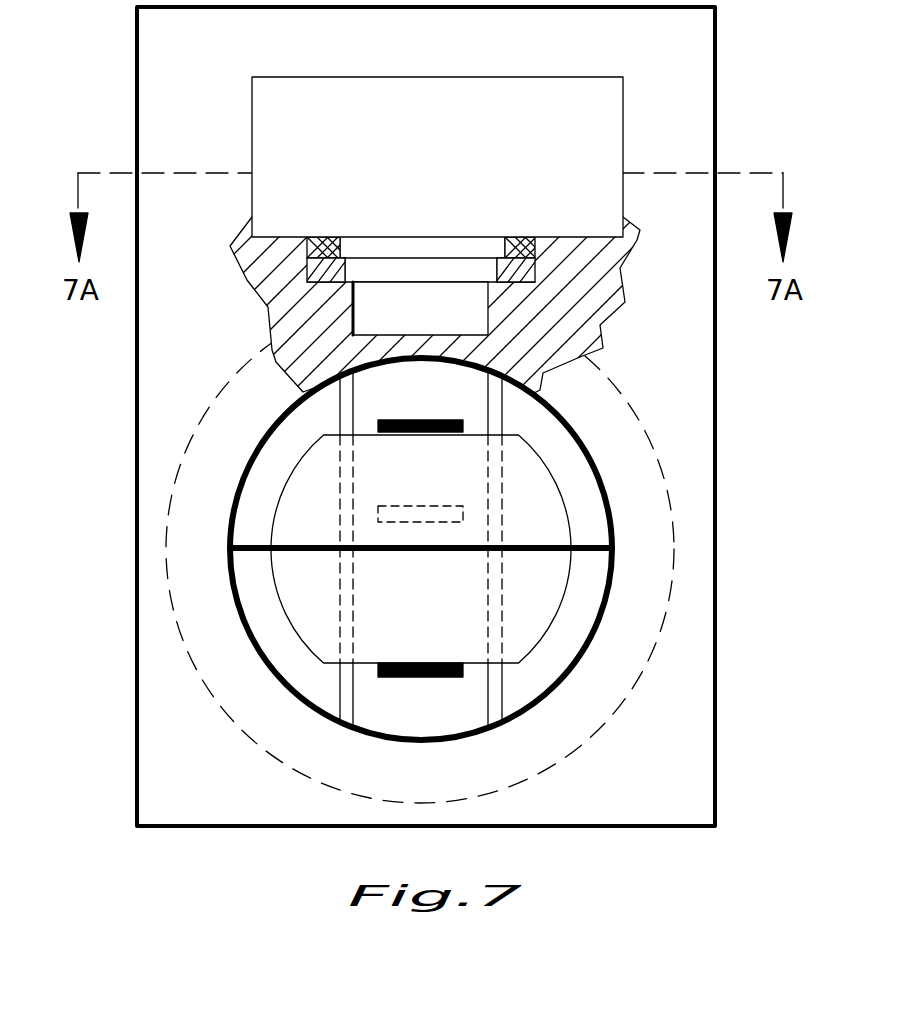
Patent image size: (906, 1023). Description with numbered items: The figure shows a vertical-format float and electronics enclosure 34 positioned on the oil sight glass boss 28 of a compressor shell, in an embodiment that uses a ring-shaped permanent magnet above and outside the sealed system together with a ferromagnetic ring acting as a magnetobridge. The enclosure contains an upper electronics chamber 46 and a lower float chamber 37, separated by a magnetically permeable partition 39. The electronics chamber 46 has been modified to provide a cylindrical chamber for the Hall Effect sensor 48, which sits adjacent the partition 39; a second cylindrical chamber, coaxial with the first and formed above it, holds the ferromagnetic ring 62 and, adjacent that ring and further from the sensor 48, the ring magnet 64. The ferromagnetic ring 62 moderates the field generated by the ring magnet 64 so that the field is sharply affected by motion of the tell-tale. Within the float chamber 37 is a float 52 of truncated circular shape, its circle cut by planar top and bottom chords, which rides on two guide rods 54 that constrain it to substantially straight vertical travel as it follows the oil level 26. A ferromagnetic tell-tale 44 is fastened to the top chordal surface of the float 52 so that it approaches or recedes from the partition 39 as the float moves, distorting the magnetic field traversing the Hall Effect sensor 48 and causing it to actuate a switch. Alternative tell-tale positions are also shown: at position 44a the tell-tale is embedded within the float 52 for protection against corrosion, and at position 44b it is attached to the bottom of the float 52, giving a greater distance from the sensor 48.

The float and electronics enclosure 34 is at (130, 130).
The electronics chamber 46 is at (437, 157).
The Hall Effect sensor 48 is at (420, 308).
The ring magnet 64 is at (345, 237).
The ferromagnetic ring 62 is at (472, 247).
The magnetically permeable partition 39 is at (276, 368).
The float chamber 37 is at (256, 513).
The boss 28 is at (660, 468).
The oil level 26 is at (597, 545).
The ferromagnetic tell-tale 44 is at (442, 420).
The tell-tale position 44a is at (450, 505).
The tell-tale position 44b is at (453, 663).
The float 52 is at (421, 549).
The guide rods 54 is at (487, 683).